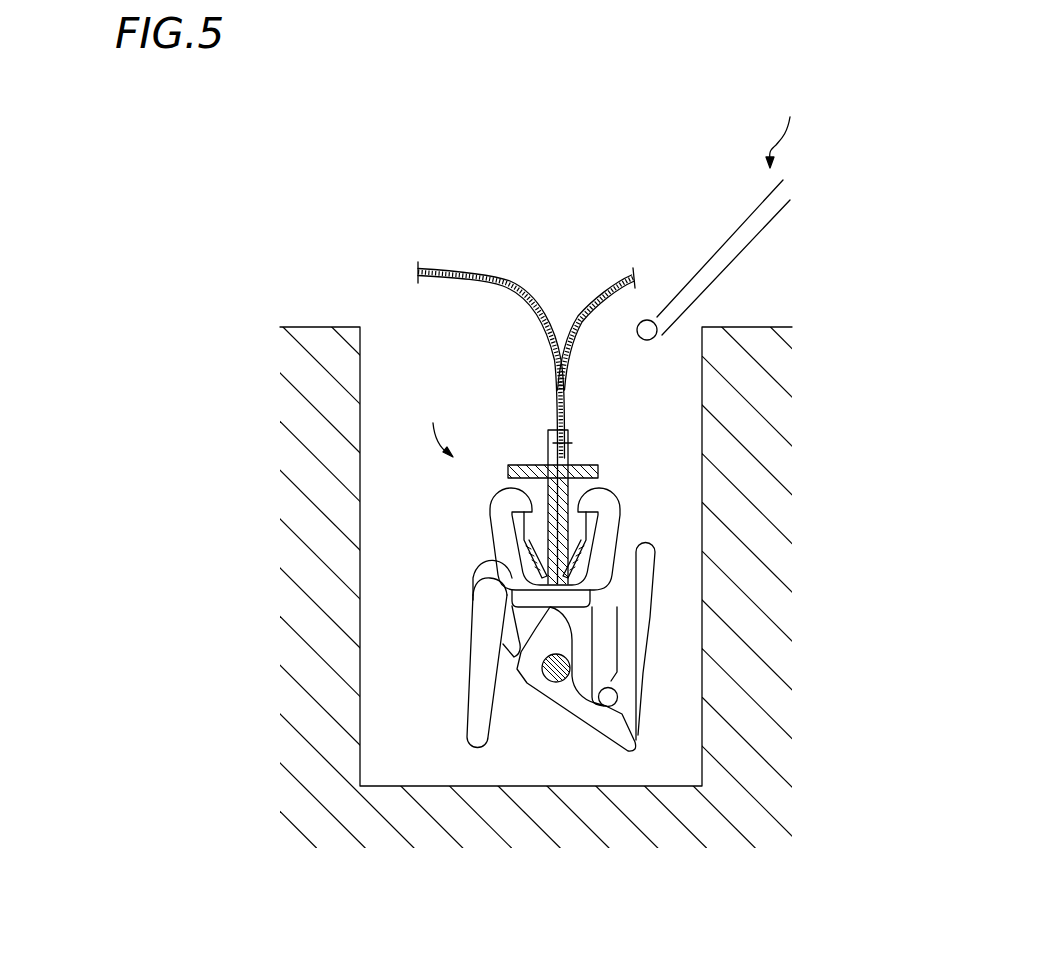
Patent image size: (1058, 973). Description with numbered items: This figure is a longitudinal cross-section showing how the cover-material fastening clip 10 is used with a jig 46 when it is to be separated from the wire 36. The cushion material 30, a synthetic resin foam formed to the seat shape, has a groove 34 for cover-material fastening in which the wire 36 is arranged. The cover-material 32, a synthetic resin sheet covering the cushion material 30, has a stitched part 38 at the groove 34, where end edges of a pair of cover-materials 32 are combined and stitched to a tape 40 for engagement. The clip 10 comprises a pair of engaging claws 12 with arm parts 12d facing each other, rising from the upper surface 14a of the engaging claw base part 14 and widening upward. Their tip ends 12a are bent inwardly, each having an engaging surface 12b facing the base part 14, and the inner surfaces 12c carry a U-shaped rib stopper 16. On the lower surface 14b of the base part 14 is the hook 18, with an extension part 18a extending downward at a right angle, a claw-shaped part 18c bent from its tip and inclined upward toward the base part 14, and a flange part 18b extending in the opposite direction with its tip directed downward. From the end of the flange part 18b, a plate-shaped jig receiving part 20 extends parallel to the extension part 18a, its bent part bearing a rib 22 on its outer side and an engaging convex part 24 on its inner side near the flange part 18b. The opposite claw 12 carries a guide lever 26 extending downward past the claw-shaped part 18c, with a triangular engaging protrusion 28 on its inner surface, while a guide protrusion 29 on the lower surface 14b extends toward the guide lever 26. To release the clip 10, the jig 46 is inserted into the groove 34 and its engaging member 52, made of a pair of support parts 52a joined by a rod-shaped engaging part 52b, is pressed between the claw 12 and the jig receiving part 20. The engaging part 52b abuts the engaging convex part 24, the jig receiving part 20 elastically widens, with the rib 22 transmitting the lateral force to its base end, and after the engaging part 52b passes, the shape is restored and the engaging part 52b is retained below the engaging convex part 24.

The cover-material fastening clip 10 is at (432, 431).
The engaging claws 12 is at (505, 550).
The tip ends 12a is at (516, 505).
The engaging surface 12b is at (525, 520).
The inner surfaces 12c is at (500, 535).
The arm parts 12d is at (512, 575).
The engaging claw base part 14 is at (548, 598).
The upper surface 14a is at (540, 582).
The lower surface 14b is at (502, 649).
The stopper 16 is at (527, 562).
The hook 18 is at (575, 697).
The extension part 18a is at (590, 657).
The flange part 18b is at (597, 733).
The claw-shaped part 18c is at (527, 687).
The jig receiving part 20 is at (622, 693).
The rib 22 is at (647, 618).
The engaging convex part 24 is at (613, 678).
The guide lever 26 is at (482, 715).
The engaging protrusion 28 is at (512, 642).
The guide protrusion 29 is at (547, 610).
The cushion material 30 is at (320, 340).
The cover-material 32 is at (470, 272).
The groove 34 is at (360, 366).
The wire 36 is at (518, 668).
The stitched part 38 is at (570, 440).
The tape for engagement 40 is at (557, 443).
The jig 46 is at (785, 129).
The engaging member 52 is at (752, 214).
The support parts 52a is at (718, 253).
The engaging part 52b is at (648, 320).